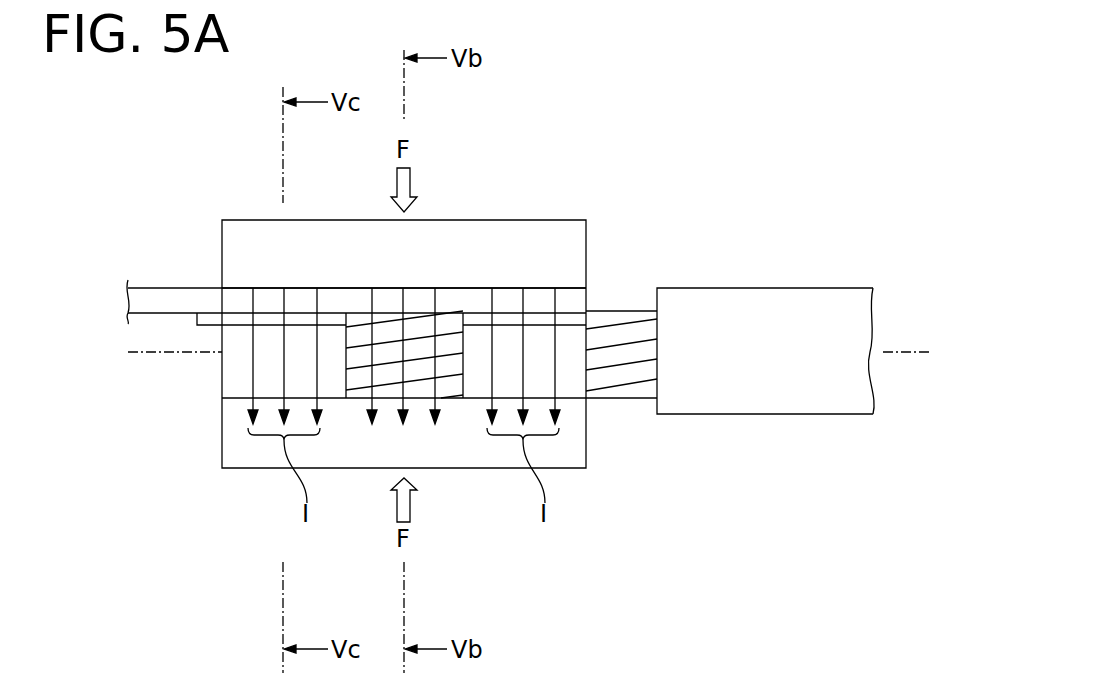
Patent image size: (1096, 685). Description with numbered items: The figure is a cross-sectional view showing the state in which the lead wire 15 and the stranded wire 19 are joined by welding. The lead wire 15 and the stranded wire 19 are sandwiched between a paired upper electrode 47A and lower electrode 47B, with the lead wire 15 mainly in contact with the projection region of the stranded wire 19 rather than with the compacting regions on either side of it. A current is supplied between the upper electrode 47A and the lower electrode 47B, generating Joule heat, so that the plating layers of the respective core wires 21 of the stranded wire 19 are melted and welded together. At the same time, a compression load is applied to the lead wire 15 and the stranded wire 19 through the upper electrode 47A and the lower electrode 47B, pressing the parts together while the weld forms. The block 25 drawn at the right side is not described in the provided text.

The lead wire 15 is at (185, 288).
The upper electrode 47A is at (513, 220).
The lower electrode 47B is at (472, 468).
The core wires 21 is at (613, 363).
The stranded wire 19 is at (765, 319).
The block body 25 is at (757, 288).